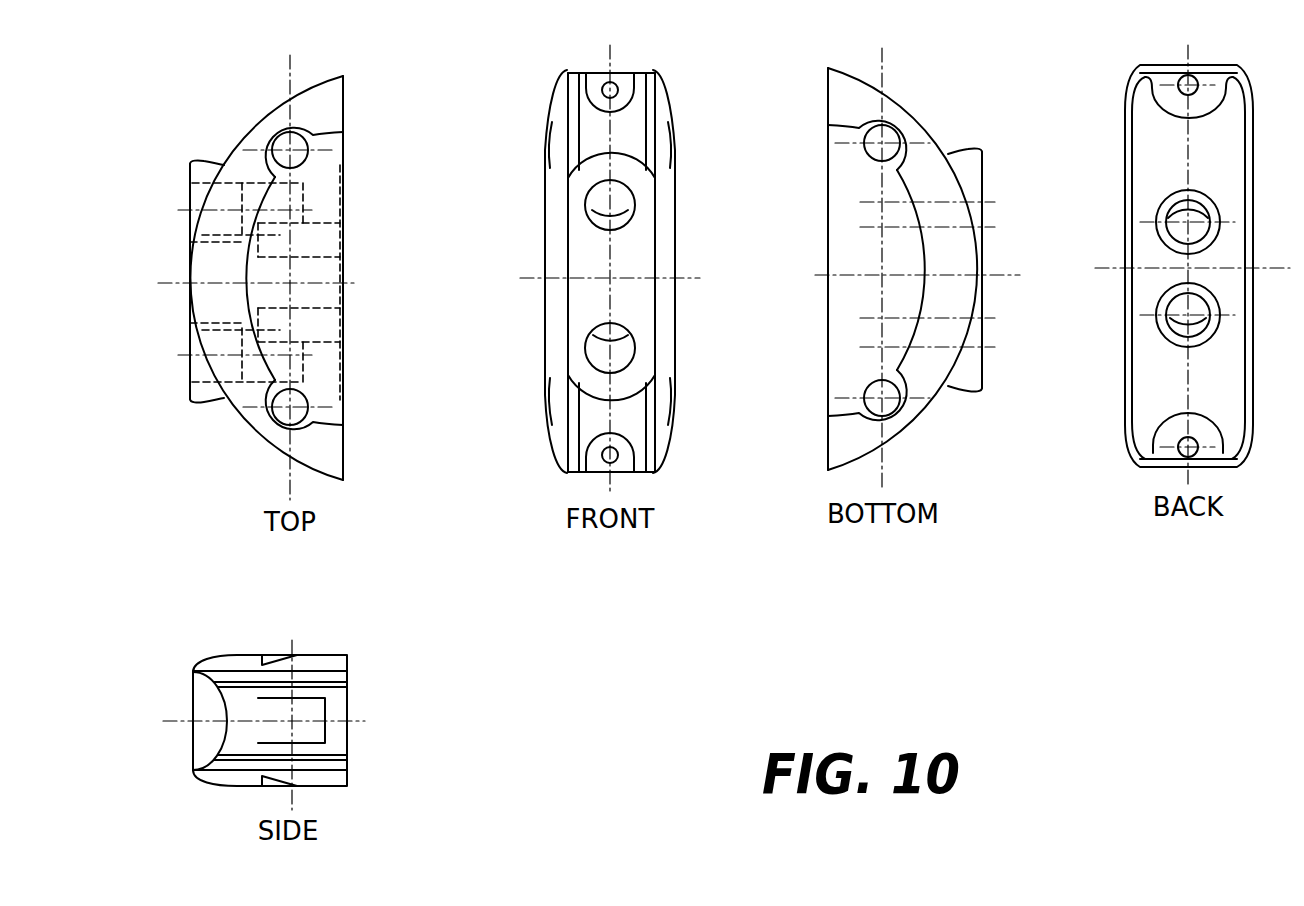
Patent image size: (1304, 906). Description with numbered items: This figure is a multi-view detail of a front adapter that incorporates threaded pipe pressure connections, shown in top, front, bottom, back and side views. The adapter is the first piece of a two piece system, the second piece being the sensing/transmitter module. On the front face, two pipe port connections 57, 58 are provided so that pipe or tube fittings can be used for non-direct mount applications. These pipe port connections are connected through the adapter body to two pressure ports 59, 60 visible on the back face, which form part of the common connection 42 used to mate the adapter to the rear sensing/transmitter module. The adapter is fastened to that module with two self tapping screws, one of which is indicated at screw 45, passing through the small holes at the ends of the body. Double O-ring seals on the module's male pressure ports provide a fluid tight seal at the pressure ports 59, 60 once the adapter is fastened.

The self tapping screw 45 is at (613, 90).
The pipe port connection 57 is at (627, 203).
The pipe port connection 58 is at (614, 342).
The pressure port 59 is at (1188, 222).
The common connection 42 is at (1206, 192).
The pressure port 60 is at (1176, 318).